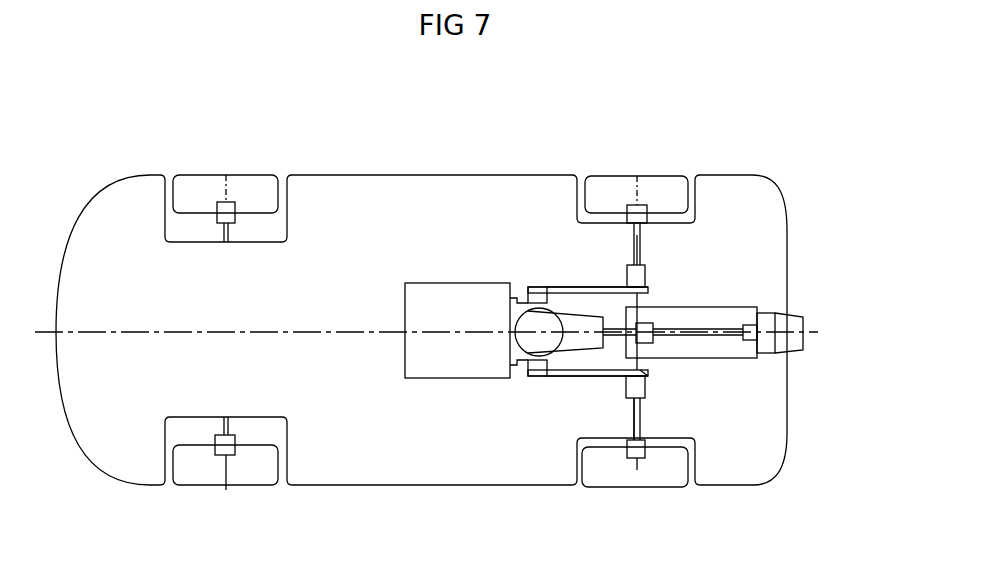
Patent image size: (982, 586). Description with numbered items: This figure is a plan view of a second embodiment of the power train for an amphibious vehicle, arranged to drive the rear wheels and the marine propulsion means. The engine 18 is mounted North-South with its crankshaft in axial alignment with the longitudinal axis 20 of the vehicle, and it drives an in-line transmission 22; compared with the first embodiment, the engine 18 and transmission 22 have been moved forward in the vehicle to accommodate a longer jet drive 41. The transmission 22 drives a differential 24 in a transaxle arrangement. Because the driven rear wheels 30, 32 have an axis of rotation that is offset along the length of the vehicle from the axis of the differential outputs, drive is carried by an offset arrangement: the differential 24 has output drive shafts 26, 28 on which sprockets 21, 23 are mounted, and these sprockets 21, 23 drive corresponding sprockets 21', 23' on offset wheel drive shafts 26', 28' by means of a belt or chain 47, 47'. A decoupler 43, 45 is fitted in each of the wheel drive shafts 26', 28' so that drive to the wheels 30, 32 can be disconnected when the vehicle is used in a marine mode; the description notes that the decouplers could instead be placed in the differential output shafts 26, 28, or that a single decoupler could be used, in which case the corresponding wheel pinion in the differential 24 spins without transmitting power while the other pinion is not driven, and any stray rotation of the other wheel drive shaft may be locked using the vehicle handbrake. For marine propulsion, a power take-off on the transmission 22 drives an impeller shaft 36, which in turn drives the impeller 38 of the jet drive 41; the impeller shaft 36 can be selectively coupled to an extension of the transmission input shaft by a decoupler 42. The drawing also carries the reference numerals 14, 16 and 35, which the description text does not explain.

The front wheel 14 is at (200, 190).
The front wheel 16 is at (202, 475).
The engine 18 is at (420, 298).
The axis 20 is at (92, 329).
The sprocket 21 is at (540, 202).
The sprocket 21' is at (649, 244).
The transmission 22 is at (609, 390).
The sprocket 23 is at (512, 432).
The sprocket 23' is at (747, 463).
The differential 24 is at (597, 342).
The output drive shaft 26 is at (450, 207).
The wheel drive shaft 26' is at (572, 188).
The output drive shaft 28 is at (484, 458).
The wheel drive shaft 28' is at (695, 477).
The rear wheel 30 is at (608, 195).
The rear wheel 32 is at (647, 467).
The drive unit 35 is at (385, 296).
The impeller shaft 36 is at (732, 337).
The impeller 38 is at (770, 327).
The jet drive 41 is at (743, 315).
The decoupler 42 is at (650, 322).
The decoupler 43 is at (646, 282).
The decoupler 45 is at (645, 397).
The belt or chain 47 is at (560, 199).
The belt or chain 47' is at (597, 466).